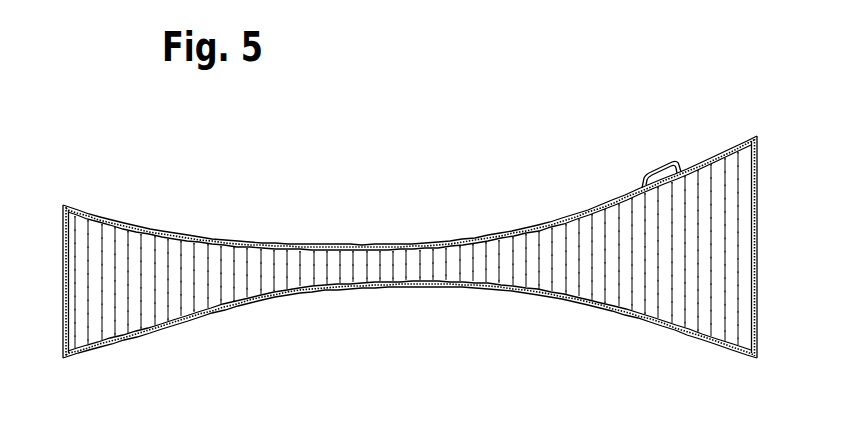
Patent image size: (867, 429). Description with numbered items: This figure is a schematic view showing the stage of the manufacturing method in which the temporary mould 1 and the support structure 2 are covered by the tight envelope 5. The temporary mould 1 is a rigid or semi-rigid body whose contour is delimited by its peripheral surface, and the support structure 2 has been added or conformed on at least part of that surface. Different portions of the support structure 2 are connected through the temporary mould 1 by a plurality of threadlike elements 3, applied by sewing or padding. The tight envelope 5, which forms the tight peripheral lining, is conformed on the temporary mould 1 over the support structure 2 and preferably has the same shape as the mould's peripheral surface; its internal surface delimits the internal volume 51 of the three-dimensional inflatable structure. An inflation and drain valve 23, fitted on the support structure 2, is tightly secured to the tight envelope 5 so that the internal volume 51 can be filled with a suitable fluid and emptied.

The tight envelope 5 is at (187, 217).
The internal volume 51 is at (512, 232).
The temporary mould 1 is at (140, 288).
The support structure 2 is at (294, 274).
The threadlike elements 3 is at (696, 293).
The valve 23 is at (634, 148).